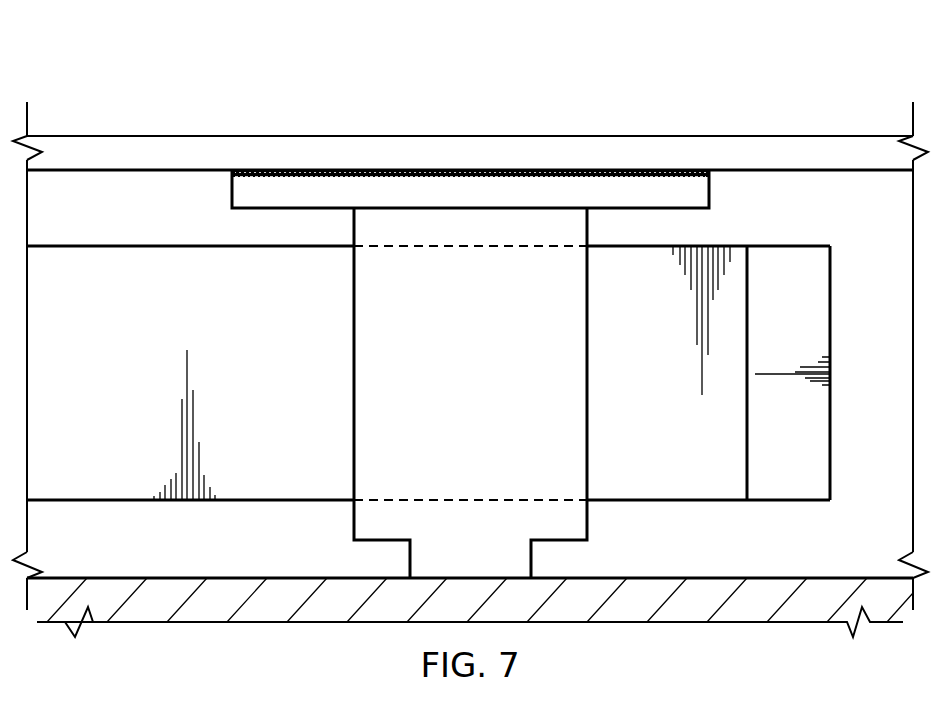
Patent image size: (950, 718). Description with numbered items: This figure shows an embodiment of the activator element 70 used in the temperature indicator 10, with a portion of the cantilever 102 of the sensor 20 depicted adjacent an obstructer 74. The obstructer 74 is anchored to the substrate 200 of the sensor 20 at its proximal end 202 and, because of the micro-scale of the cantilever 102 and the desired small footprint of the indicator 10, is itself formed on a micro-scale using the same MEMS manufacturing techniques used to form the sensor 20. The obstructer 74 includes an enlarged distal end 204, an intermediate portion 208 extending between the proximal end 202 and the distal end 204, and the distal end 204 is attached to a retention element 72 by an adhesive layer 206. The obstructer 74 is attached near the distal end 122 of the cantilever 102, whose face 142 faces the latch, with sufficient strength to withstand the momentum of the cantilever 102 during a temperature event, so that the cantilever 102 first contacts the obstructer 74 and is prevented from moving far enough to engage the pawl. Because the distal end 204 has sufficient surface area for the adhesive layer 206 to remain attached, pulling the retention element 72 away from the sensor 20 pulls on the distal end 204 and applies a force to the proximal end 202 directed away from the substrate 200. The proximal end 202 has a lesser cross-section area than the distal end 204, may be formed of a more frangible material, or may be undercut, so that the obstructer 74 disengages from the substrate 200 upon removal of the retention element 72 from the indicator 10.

The indicator 10 is at (328, 66).
The activator element 70 is at (640, 108).
The retention element 72 is at (478, 143).
The adhesive layer 206 is at (250, 173).
The enlarged distal end 204 is at (718, 198).
The cantilever 102 is at (114, 240).
The obstructer 74 is at (589, 345).
The intermediate portion 208 is at (362, 374).
The face 142 is at (790, 337).
The distal end 122 is at (832, 405).
The sensor 20 is at (104, 518).
The substrate 200 is at (243, 587).
The proximal end 202 is at (565, 556).